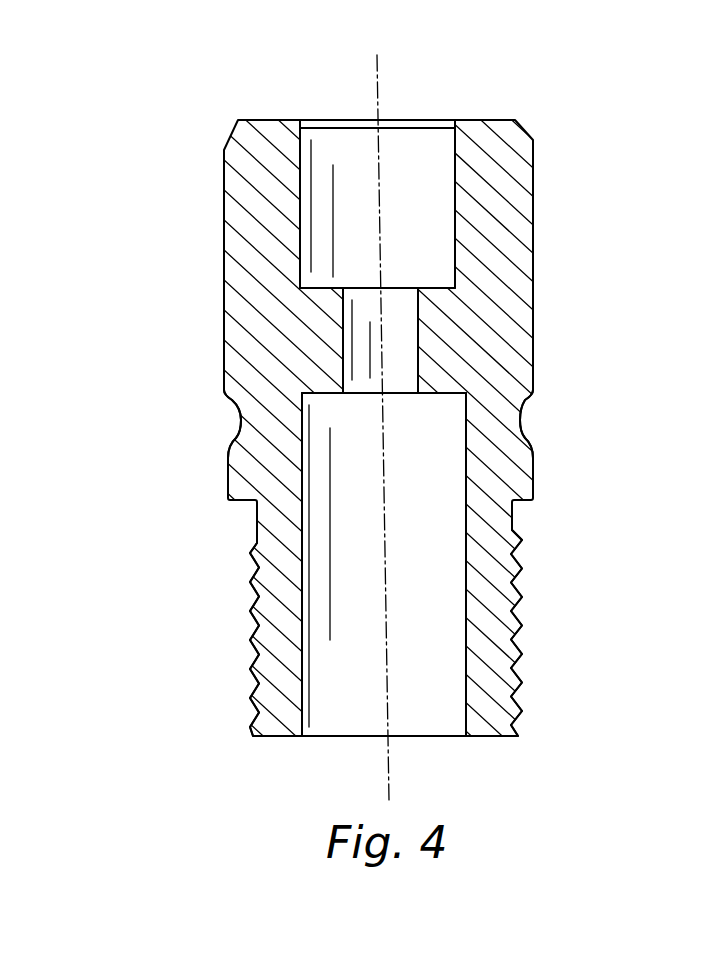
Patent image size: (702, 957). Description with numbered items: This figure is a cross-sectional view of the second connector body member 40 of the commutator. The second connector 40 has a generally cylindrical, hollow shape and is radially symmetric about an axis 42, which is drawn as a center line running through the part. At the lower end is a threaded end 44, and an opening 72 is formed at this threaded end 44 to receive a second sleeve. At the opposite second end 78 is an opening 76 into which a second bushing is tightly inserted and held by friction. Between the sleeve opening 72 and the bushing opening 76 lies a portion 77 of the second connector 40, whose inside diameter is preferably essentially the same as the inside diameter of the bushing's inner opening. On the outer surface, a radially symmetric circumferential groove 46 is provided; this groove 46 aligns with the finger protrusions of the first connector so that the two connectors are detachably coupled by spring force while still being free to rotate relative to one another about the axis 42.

The second connector body member 40 is at (171, 138).
The second end 78 is at (607, 163).
The opening 76 is at (418, 145).
The portion 77 is at (400, 347).
The opening 72 is at (353, 713).
The axis 42 is at (389, 764).
The threaded end 44 is at (248, 642).
The circumferential groove 46 is at (237, 438).